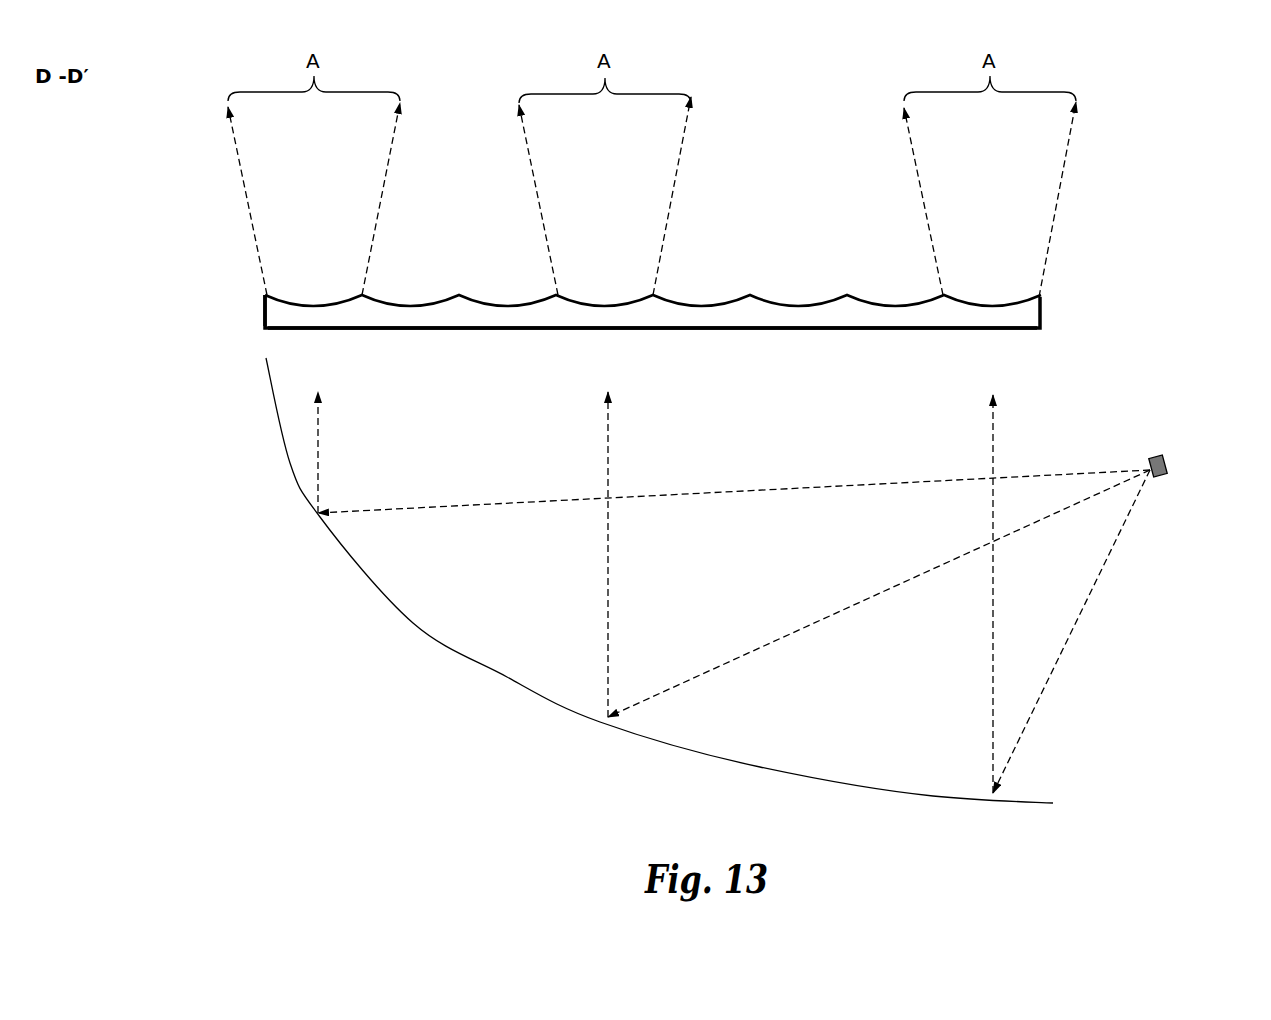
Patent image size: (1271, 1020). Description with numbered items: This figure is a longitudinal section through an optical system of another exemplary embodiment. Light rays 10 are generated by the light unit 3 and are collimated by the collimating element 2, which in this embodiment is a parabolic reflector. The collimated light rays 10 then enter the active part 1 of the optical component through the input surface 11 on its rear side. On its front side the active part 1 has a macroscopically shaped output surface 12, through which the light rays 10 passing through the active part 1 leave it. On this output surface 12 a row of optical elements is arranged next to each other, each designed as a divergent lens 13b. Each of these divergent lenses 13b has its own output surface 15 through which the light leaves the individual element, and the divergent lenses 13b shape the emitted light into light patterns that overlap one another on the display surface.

The active part of the optical component 1 is at (650, 294).
The collimating element 2 is at (413, 623).
The light unit 3 is at (1165, 478).
The light rays 10 is at (641, 441).
The input surface 11 is at (957, 333).
The output surface 12 is at (284, 282).
The divergent lenses 13b is at (322, 313).
The output surface of the optical element 15 is at (297, 303).